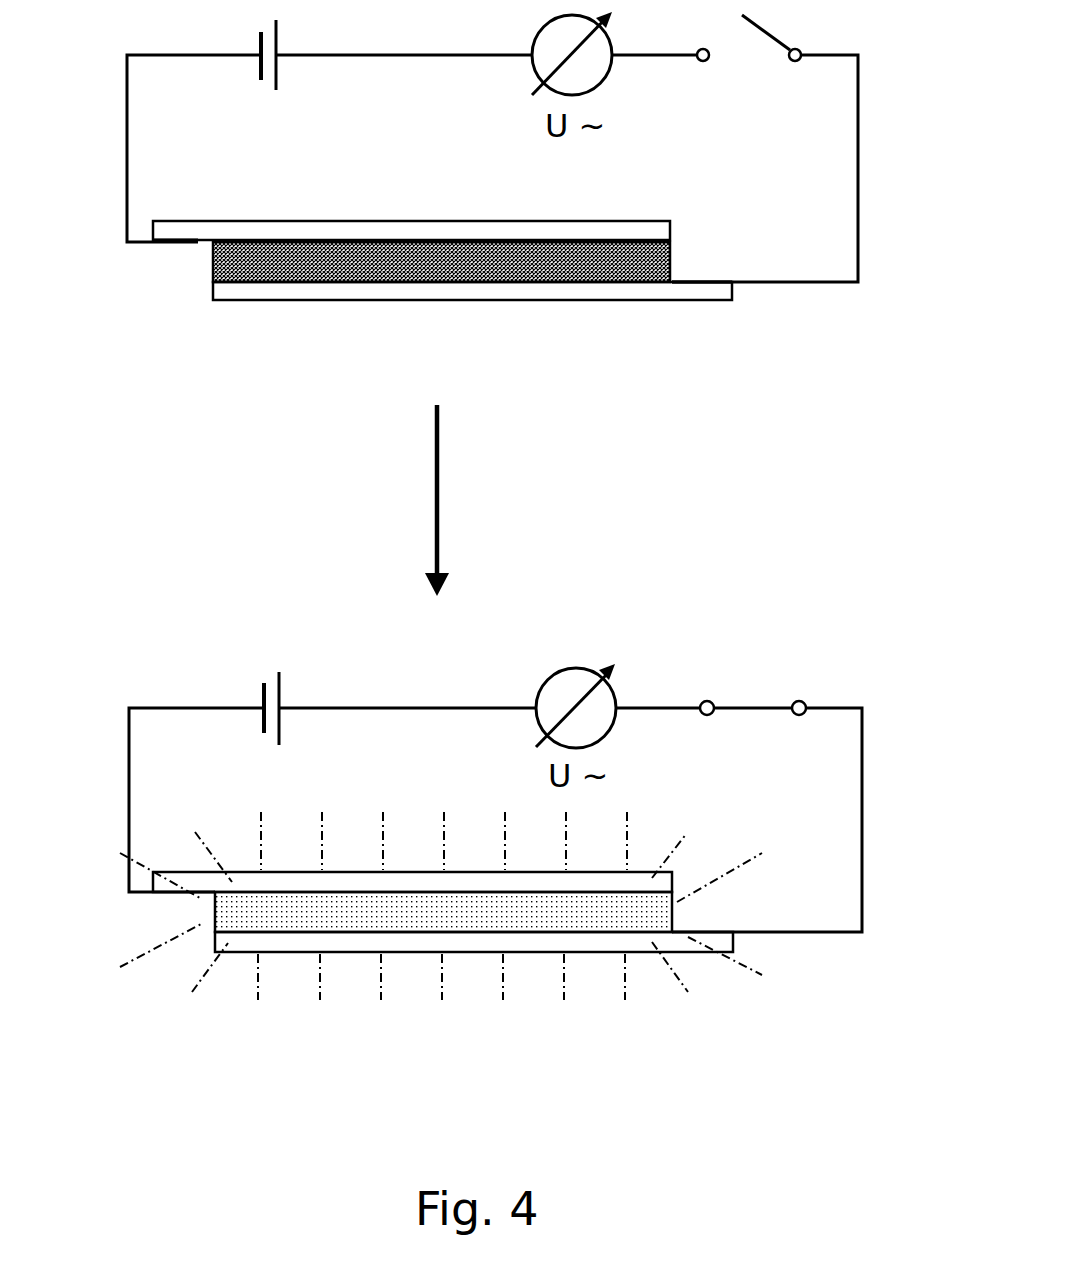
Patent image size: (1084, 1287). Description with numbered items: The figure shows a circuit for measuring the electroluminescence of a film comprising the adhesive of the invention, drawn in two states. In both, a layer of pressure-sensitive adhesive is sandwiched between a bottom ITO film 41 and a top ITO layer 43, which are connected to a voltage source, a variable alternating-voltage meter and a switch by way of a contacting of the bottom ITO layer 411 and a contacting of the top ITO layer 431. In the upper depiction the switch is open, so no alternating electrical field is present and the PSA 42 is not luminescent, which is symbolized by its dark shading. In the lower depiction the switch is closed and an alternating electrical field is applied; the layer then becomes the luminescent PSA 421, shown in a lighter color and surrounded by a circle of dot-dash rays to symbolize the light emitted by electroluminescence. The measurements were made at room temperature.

The lower electrode substrate 41 is at (528, 292).
The electrode terminal portion of lower electrode substrate 411 is at (710, 280).
The light-emitting layer (non-emitting state) 42 is at (550, 262).
The light-emitting layer (emitting state) 421 is at (550, 910).
The upper electrode 43 is at (643, 230).
The electrode terminal portion of upper electrode 431 is at (177, 243).